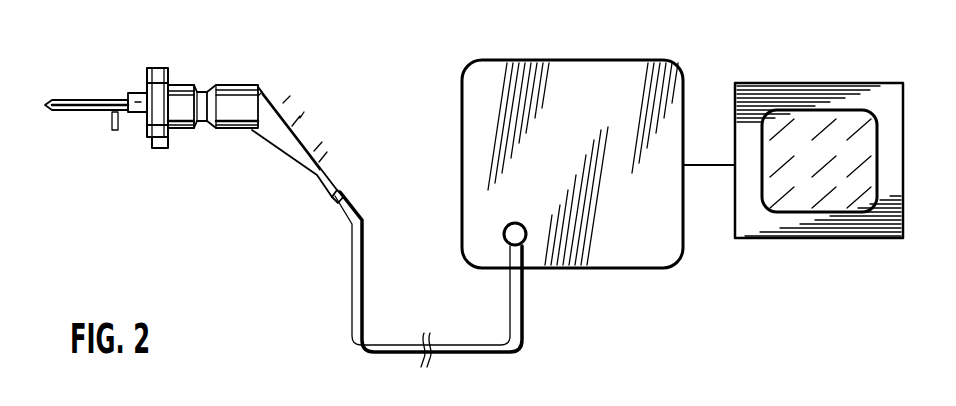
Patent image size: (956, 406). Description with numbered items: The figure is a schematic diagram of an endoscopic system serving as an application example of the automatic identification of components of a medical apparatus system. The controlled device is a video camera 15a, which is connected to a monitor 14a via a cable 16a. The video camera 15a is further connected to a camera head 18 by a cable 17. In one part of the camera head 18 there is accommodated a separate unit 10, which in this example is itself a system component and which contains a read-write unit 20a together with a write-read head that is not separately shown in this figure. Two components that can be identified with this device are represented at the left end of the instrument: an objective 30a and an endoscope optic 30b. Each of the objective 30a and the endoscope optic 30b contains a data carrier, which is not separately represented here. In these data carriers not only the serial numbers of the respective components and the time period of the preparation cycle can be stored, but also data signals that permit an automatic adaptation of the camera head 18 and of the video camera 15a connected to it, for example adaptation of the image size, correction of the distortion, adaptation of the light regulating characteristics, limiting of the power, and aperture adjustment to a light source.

The separate unit 10 is at (202, 123).
The monitor 14a is at (783, 97).
The video camera 15a is at (553, 77).
The cable 16a is at (708, 165).
The cable 17 is at (445, 343).
The camera head 18 is at (247, 97).
The read-write unit 20a is at (289, 97).
The objective 30a is at (156, 63).
The endoscope optic 30b is at (83, 100).